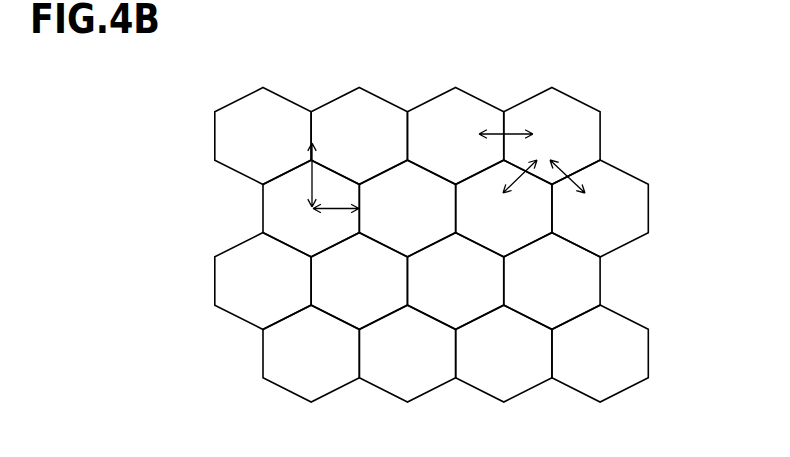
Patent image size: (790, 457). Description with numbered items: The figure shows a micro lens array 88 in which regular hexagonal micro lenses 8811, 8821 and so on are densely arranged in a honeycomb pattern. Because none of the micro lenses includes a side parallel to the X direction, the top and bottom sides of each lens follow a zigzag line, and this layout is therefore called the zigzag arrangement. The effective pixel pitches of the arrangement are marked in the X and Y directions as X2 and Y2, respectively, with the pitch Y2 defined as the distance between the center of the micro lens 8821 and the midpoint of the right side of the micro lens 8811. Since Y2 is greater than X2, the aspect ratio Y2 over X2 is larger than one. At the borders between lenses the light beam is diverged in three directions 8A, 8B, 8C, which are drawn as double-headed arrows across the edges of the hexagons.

The micro lens array 88 is at (436, 232).
The micro lens 8811 is at (240, 113).
The micro lens 8821 is at (282, 210).
The direction 8A is at (512, 131).
The direction 8B is at (522, 185).
The direction 8C is at (567, 185).
The effective pixel pitch in X direction X2 is at (333, 214).
The effective pixel pitch in Y direction Y2 is at (314, 177).